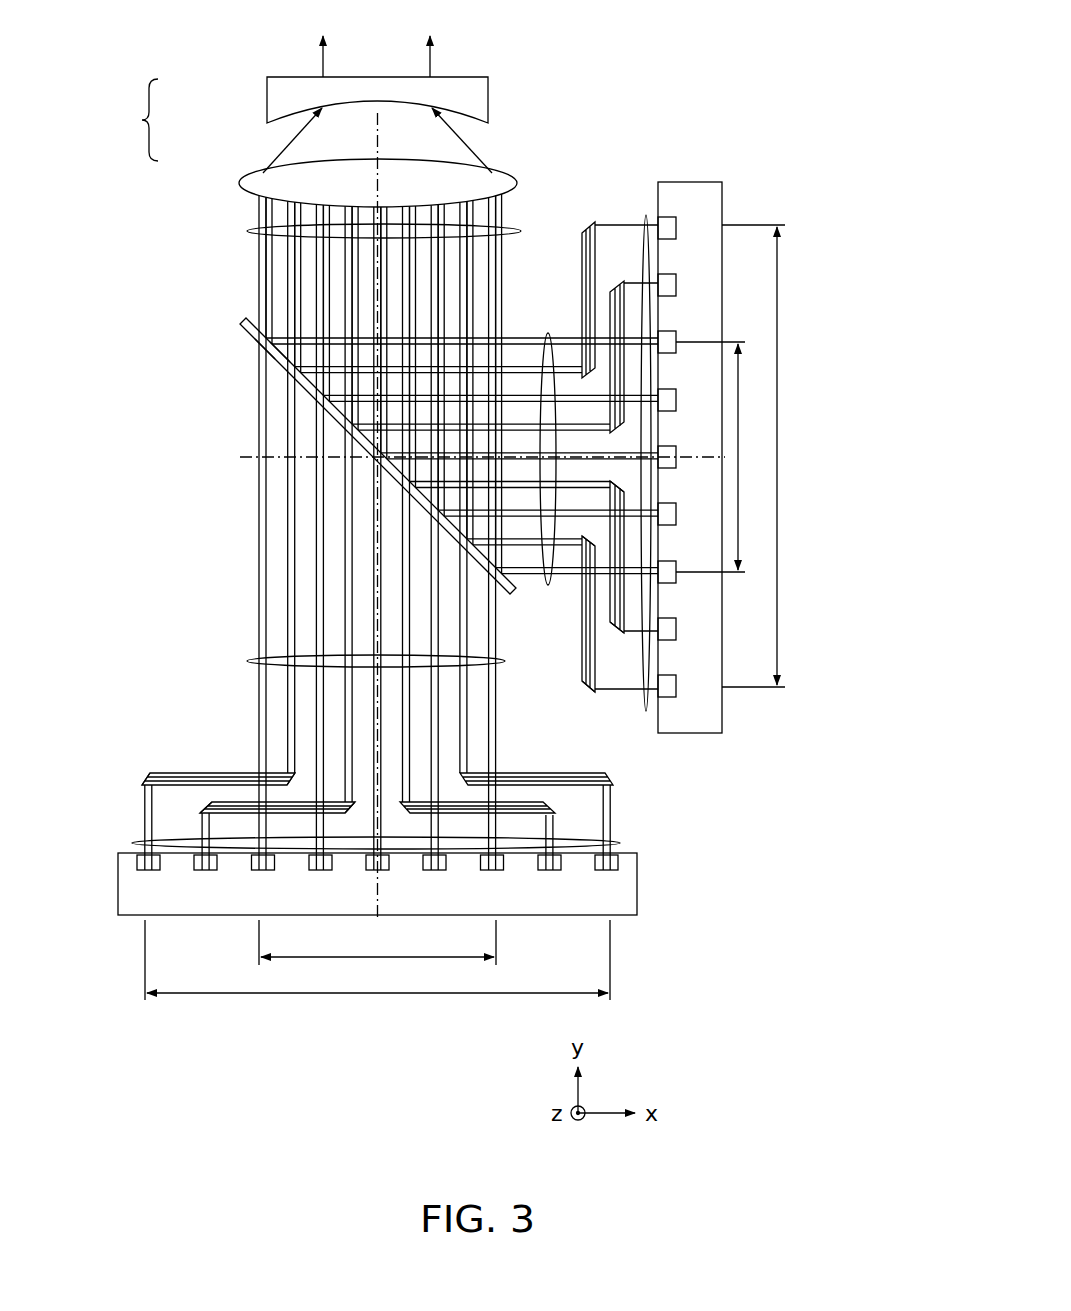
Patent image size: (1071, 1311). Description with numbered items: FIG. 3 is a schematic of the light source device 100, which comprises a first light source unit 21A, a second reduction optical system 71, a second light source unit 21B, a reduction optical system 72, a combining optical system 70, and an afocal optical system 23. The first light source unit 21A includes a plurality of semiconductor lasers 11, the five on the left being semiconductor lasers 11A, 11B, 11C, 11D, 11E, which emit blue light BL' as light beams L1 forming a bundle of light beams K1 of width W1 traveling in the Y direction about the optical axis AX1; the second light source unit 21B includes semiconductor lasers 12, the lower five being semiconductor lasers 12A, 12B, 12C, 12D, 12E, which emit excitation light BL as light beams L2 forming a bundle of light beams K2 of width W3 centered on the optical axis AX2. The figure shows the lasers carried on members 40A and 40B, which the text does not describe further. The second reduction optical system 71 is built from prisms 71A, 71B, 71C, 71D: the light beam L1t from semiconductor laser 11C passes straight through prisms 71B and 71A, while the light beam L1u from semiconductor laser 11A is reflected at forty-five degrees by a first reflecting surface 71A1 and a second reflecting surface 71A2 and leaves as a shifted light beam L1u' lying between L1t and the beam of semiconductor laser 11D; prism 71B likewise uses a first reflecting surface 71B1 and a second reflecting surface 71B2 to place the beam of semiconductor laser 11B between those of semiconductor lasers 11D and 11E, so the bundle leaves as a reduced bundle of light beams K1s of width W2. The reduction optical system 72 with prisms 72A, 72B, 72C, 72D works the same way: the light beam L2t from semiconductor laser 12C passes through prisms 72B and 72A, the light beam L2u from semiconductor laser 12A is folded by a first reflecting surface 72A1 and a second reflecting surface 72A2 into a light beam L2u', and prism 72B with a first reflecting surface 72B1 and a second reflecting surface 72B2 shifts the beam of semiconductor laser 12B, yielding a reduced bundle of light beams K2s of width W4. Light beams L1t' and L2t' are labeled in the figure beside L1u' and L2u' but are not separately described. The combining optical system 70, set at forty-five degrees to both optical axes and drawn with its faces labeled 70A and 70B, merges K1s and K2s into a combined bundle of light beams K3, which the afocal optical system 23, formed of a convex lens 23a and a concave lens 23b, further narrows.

The light source device 100 is at (681, 76).
The afocal optical system 23 is at (135, 120).
The convex lens 23a is at (241, 186).
The concave lens 23b is at (267, 97).
The combined bundle of light beams K3 is at (247, 231).
The combining optical system 70 is at (246, 318).
The first surface of dichroic mirror 70A is at (262, 344).
The second surface of dichroic mirror 70B is at (281, 345).
The second reduction optical system 71 is at (187, 702).
The prism 71A is at (215, 773).
The first reflecting surface 71A1 is at (144, 773).
The second reflecting surface 71A2 is at (297, 775).
The prism 71B is at (242, 805).
The first reflecting surface 71B1 is at (203, 812).
The second reflecting surface 71B2 is at (350, 806).
The prism 71C is at (510, 801).
The prism 71D is at (542, 771).
The reduction optical system 72 is at (606, 216).
The prism 72A is at (582, 632).
The first reflecting surface 72A1 is at (588, 694).
The second reflecting surface 72A2 is at (588, 546).
The prism 72B is at (612, 612).
The first reflecting surface 72B1 is at (614, 636).
The second reflecting surface 72B2 is at (618, 483).
The prism 72C is at (610, 310).
The prism 72D is at (580, 247).
The excitation light BL is at (621, 170).
The light beam L2 is at (462, 410).
The light beam L1 is at (450, 536).
The blue light BL' is at (674, 836).
The bundle of light beams K2 is at (647, 215).
The reduced bundle of light beams K2s is at (551, 334).
The bundle of light beams K1 is at (620, 843).
The reduced bundle of light beams K1s is at (247, 661).
The first light source unit 21A is at (648, 895).
The second light source unit 21B is at (693, 176).
The first substrate 40A is at (630, 908).
The second substrate 40B is at (710, 195).
The semiconductor laser 11 is at (364, 961).
The semiconductor laser 11A is at (142, 868).
The semiconductor laser 11B is at (205, 868).
The semiconductor laser 11C is at (258, 868).
The semiconductor laser 11D is at (325, 868).
The semiconductor laser 11E is at (388, 865).
The semiconductor laser 12 is at (760, 462).
The semiconductor laser 12A is at (670, 688).
The semiconductor laser 12B is at (670, 630).
The semiconductor laser 12C is at (670, 572).
The semiconductor laser 12D is at (670, 512).
The semiconductor laser 12E is at (670, 455).
The optical axis AX1 is at (379, 920).
The optical axis AX2 is at (700, 457).
The light beam L1u is at (129, 785).
The light beam L1t is at (184, 830).
The light beam L1u' is at (228, 589).
The shifted light beam edge L1t' is at (242, 603).
The light beam L2u is at (740, 711).
The light beam L2t is at (730, 601).
The light beam L2u' is at (708, 516).
The shifted light beam edge L2t' is at (705, 561).
The width W1 is at (447, 995).
The width W2 is at (391, 960).
The width W3 is at (780, 290).
The width W4 is at (742, 355).